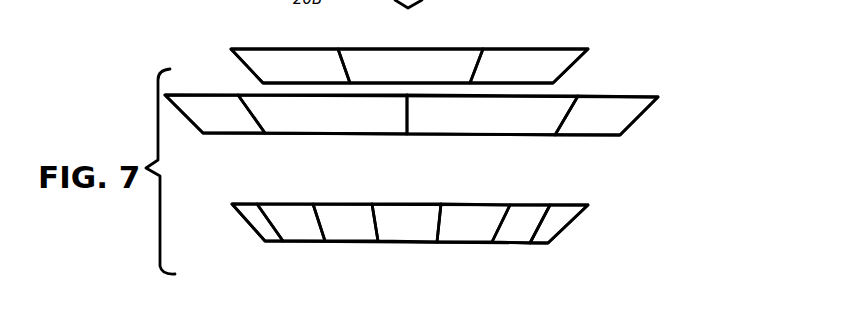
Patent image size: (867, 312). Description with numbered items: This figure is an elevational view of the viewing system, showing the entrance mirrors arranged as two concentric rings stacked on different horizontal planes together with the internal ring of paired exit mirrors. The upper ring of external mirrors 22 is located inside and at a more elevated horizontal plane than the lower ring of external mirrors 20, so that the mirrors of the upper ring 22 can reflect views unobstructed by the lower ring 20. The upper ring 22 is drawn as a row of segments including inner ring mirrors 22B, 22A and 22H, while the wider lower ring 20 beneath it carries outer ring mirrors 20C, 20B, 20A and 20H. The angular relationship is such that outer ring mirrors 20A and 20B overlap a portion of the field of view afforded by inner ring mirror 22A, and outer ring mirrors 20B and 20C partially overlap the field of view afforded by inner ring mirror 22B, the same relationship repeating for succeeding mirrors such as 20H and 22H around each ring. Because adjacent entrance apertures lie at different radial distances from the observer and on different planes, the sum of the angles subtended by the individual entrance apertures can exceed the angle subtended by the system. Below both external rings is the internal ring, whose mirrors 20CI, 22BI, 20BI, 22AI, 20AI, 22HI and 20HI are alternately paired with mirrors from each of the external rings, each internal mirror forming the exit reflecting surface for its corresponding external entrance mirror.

The outer ring of entrance mirrors 20 is at (672, 117).
The outer ring mirror 20A is at (487, 136).
The outer ring mirror 20B is at (330, 135).
The outer ring mirror 20C is at (212, 135).
The outer ring mirror 20H is at (610, 136).
The inner ring of entrance mirrors 22 is at (606, 41).
The inner ring mirror 22A is at (403, 49).
The inner ring mirror 22B is at (283, 49).
The inner ring mirror 22H is at (537, 49).
The internal ring mirror 20CI is at (267, 230).
The internal ring mirror 22BI is at (298, 243).
The internal ring mirror 20BI is at (363, 243).
The internal ring mirror 22AI is at (418, 243).
The internal ring mirror 20AI is at (480, 243).
The internal ring mirror 22HI is at (528, 243).
The internal ring mirror 20HI is at (570, 230).